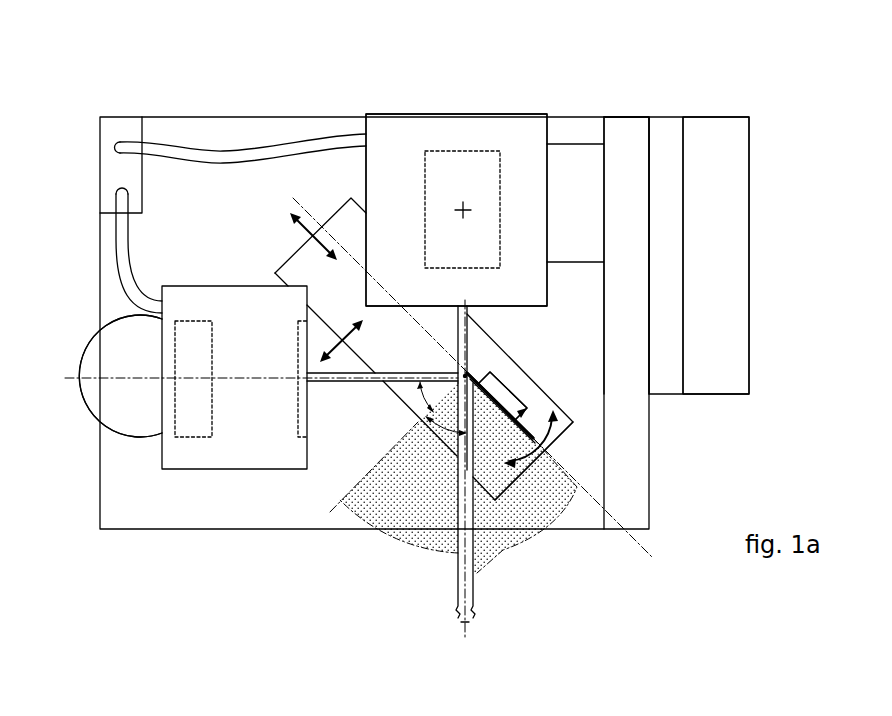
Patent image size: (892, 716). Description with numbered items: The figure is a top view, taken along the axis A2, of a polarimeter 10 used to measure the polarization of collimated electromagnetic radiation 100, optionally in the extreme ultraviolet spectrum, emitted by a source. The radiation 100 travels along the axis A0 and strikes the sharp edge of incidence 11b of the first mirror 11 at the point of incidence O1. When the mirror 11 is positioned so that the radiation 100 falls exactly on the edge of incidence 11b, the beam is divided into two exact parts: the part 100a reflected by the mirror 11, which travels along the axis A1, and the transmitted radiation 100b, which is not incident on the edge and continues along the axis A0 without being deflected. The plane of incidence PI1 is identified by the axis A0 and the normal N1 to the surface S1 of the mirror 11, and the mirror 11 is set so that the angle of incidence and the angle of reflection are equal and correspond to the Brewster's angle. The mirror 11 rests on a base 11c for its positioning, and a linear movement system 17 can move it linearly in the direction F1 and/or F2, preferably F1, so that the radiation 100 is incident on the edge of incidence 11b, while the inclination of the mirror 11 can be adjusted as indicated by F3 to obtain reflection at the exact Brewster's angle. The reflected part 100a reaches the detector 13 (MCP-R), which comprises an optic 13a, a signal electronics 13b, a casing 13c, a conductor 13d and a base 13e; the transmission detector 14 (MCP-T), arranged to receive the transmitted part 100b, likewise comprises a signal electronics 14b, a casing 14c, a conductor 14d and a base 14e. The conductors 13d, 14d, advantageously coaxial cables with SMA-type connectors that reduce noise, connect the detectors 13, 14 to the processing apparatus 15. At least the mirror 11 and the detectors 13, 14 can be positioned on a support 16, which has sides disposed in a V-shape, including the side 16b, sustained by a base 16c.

The polarimeter 10 is at (98, 57).
The processing apparatus 15 is at (117, 127).
The conductor 14d is at (221, 153).
The detector 14 is at (435, 104).
The signal electronics 14b is at (440, 176).
The casing 14c is at (507, 129).
The base 14e is at (582, 167).
The support 16 is at (652, 106).
The side 16b is at (625, 137).
The base 16c is at (730, 176).
The detector 13 is at (125, 342).
The base 13e is at (143, 403).
The conductor 13d is at (122, 254).
The casing 13c is at (239, 455).
The signal electronics 13b is at (193, 418).
The optic 13a is at (302, 420).
The first mirror 11 is at (556, 401).
The edge of incidence 11b is at (470, 372).
The base 11c is at (505, 396).
The linear movement system 17 is at (562, 423).
The collimated radiation 100 is at (470, 597).
The reflected part of the radiation 100a is at (349, 382).
The transmitted radiation 100b is at (466, 350).
The axis of the incident radiation A0 is at (458, 632).
The axis of the reflected radiation A1 is at (80, 378).
The viewing axis A2 is at (465, 210).
The point of incidence O1 is at (463, 374).
The surface of the first mirror S1 is at (637, 543).
The normal N1 is at (342, 500).
The plane of incidence PI1 is at (447, 545).
The direction of linear movement F1 is at (308, 232).
The direction of linear movement F2 is at (341, 338).
The angle of inclination adjustment F3 is at (556, 446).